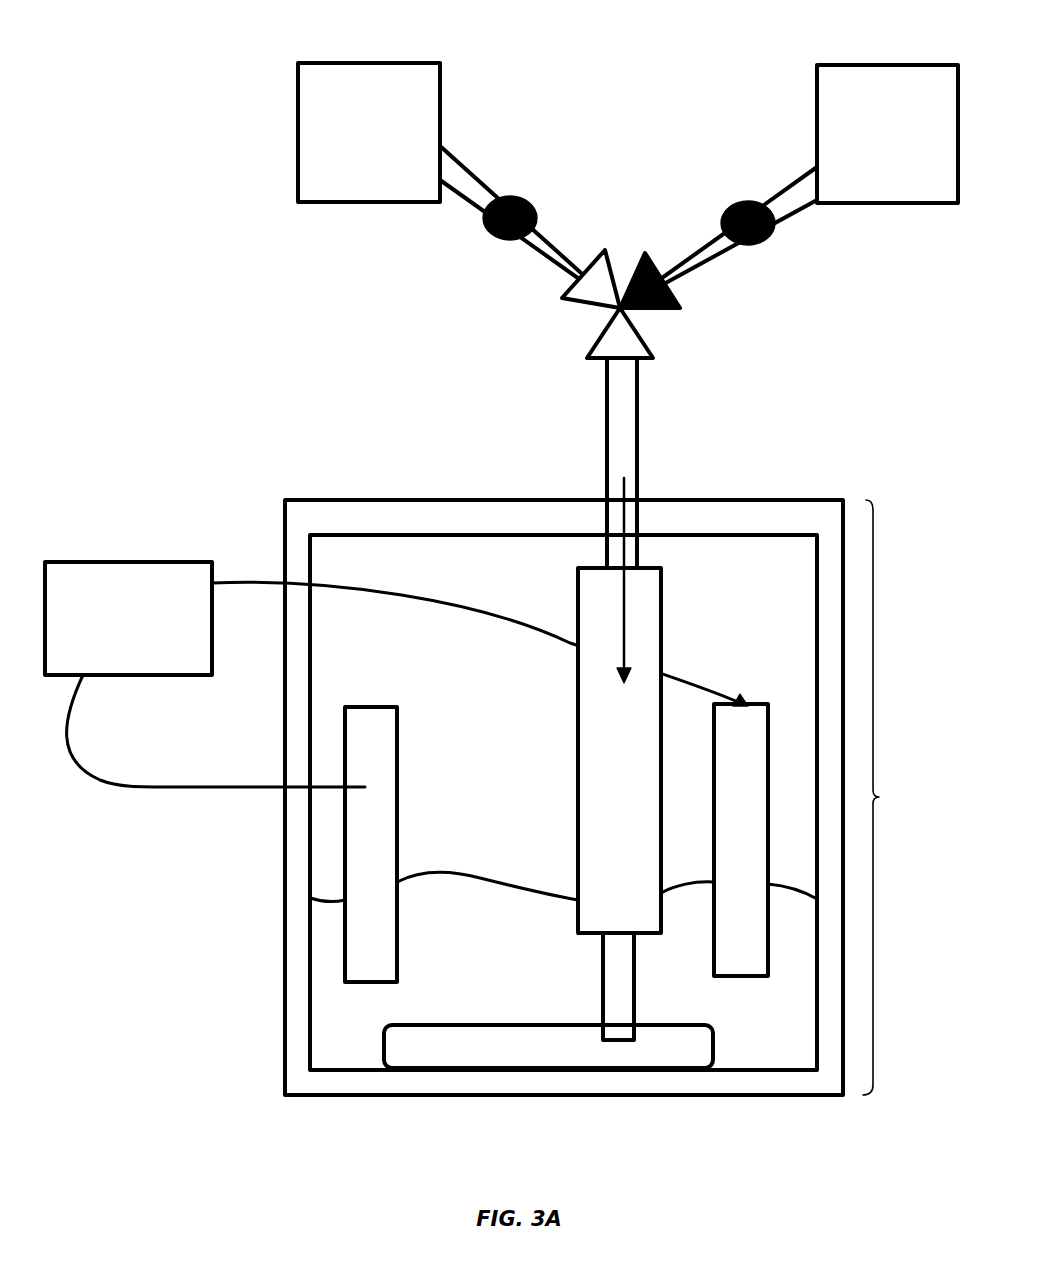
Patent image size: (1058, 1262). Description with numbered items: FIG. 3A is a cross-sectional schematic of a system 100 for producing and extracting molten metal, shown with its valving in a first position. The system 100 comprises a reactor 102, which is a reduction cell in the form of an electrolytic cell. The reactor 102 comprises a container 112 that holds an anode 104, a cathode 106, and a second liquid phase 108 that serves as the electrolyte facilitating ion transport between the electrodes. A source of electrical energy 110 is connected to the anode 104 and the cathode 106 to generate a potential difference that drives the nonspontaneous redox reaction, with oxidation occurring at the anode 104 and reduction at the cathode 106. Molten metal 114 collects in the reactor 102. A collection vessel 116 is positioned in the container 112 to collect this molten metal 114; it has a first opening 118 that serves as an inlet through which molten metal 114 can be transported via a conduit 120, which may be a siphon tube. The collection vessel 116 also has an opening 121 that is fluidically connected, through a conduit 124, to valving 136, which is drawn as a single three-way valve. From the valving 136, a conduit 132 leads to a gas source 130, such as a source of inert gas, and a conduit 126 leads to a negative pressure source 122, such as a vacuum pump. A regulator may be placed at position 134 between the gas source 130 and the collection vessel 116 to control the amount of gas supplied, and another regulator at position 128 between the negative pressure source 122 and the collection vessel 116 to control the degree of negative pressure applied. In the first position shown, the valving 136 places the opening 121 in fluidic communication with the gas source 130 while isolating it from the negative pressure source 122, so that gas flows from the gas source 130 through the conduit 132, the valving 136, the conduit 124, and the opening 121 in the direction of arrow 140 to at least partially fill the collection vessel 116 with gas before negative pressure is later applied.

The system 100 is at (98, 83).
The reactor 102 is at (609, 797).
The anode 104 is at (371, 844).
The cathode 106 is at (741, 840).
The second liquid phase 108 is at (563, 935).
The source of electrical energy 110 is at (396, 674).
The container 112 is at (727, 512).
The molten metal 114 is at (548, 1046).
The collection vessel 116 is at (619, 750).
The first opening 118 is at (623, 937).
The conduit 120 is at (615, 1003).
The opening 121 is at (613, 565).
The negative pressure source 122 is at (887, 134).
The conduit 124 is at (626, 412).
The conduit 126 is at (707, 250).
The regulator position 128 is at (767, 240).
The gas source 130 is at (369, 132).
The conduit 132 is at (563, 253).
The regulator position 134 is at (515, 197).
The valving 136 is at (613, 310).
The arrow 140 is at (624, 595).